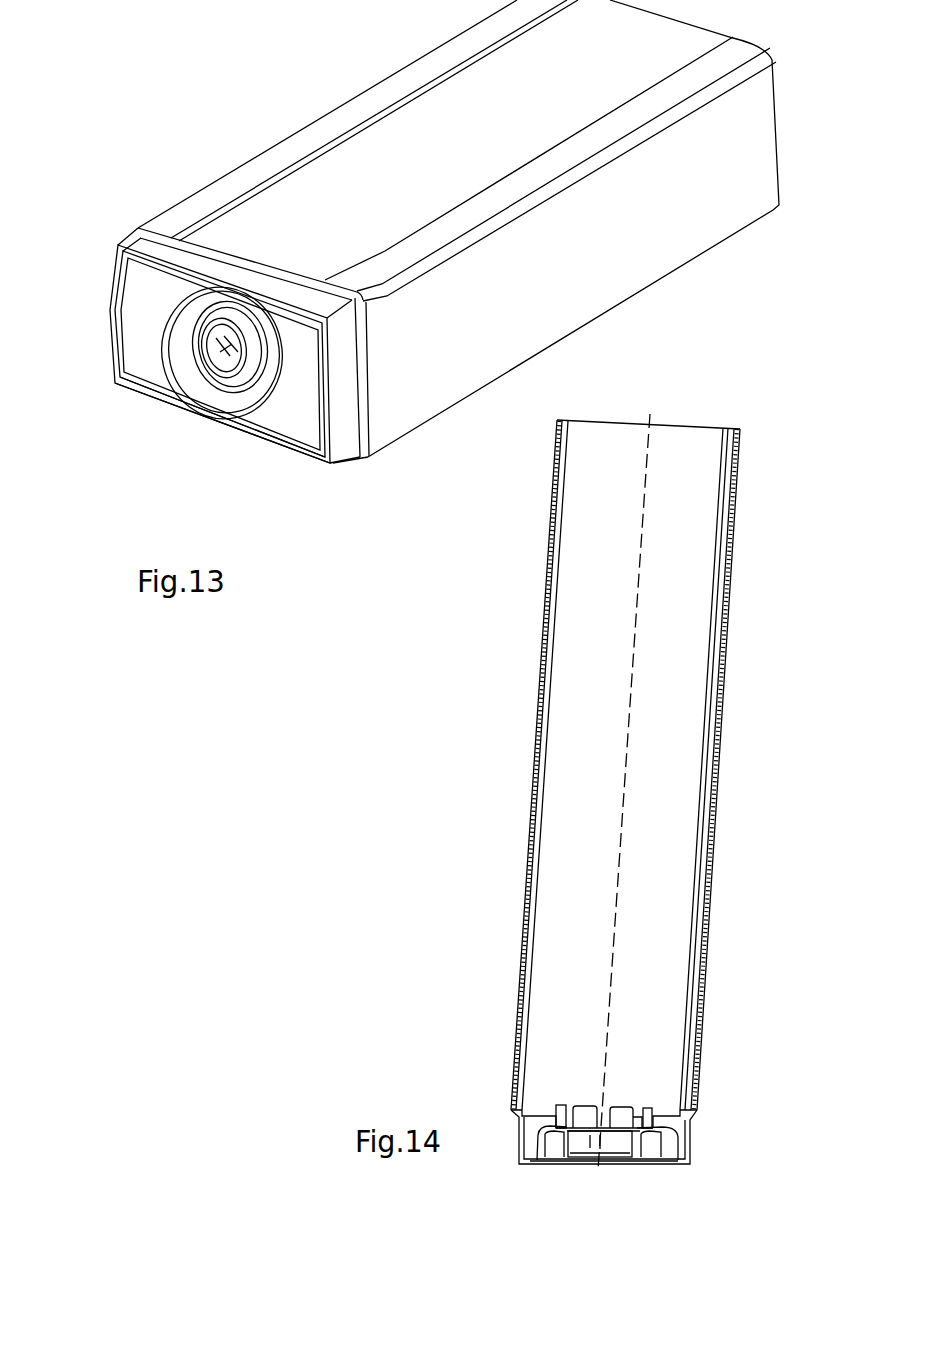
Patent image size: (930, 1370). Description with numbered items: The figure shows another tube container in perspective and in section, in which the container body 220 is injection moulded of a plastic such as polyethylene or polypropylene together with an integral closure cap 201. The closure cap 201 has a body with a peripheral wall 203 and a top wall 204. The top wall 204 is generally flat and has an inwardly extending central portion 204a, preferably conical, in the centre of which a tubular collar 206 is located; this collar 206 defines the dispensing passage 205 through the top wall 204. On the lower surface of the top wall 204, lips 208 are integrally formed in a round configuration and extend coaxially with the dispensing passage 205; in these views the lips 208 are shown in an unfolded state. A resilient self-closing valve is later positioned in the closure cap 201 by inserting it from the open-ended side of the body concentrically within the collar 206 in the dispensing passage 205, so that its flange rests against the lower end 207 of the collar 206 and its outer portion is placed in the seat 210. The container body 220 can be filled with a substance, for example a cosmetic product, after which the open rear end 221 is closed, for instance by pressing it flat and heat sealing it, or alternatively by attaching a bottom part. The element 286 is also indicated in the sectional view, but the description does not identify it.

In FIG. 13, the closure cap 201 is at (311, 433).
In FIG. 14, the closure cap 201 is at (663, 1173).
In FIG. 13, the peripheral wall 203 is at (353, 382).
In FIG. 14, the peripheral wall 203 is at (690, 1139).
In FIG. 13, the top wall 204 is at (155, 373).
In FIG. 13, the central portion 204a is at (180, 338).
In FIG. 14, the central portion 204a is at (542, 1160).
In FIG. 13, the dispensing passage 205 is at (212, 378).
In FIG. 14, the dispensing passage 205 is at (581, 1143).
In FIG. 13, the tubular collar 206 is at (262, 373).
In FIG. 14, the tubular collar 206 is at (565, 1147).
In FIG. 14, the lower end 207 is at (655, 1106).
In FIG. 13, the lips 208 is at (239, 354).
In FIG. 14, the lips 208 is at (637, 1106).
In FIG. 14, the seat 210 is at (557, 1104).
In FIG. 13, the container body 220 is at (580, 290).
In FIG. 14, the container body 220 is at (723, 694).
In FIG. 14, the open rear end 221 is at (707, 418).
In FIG. 14, the spring clip 286 is at (630, 1163).